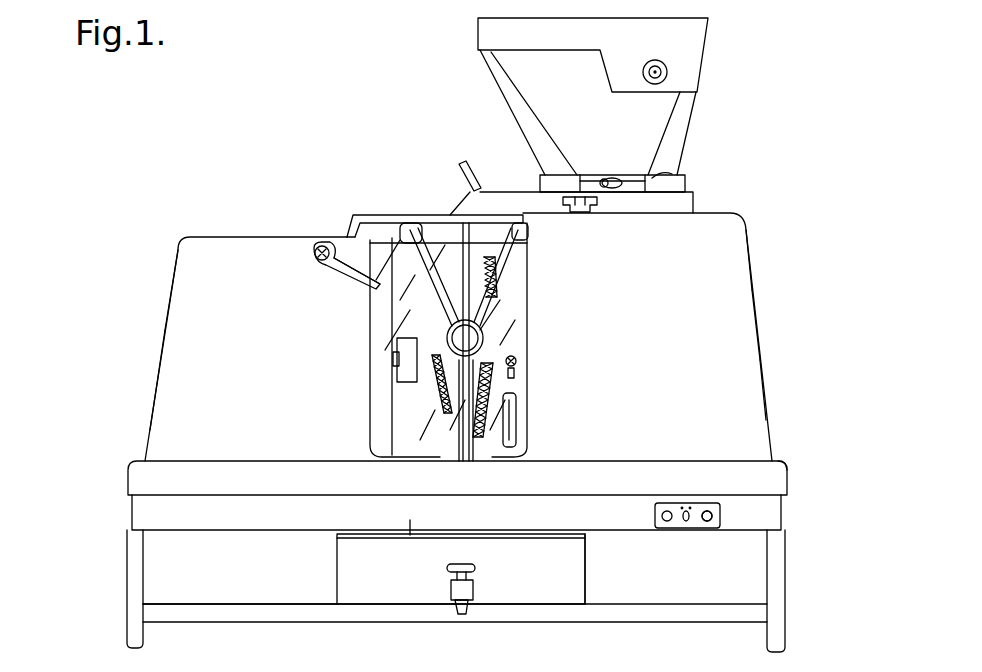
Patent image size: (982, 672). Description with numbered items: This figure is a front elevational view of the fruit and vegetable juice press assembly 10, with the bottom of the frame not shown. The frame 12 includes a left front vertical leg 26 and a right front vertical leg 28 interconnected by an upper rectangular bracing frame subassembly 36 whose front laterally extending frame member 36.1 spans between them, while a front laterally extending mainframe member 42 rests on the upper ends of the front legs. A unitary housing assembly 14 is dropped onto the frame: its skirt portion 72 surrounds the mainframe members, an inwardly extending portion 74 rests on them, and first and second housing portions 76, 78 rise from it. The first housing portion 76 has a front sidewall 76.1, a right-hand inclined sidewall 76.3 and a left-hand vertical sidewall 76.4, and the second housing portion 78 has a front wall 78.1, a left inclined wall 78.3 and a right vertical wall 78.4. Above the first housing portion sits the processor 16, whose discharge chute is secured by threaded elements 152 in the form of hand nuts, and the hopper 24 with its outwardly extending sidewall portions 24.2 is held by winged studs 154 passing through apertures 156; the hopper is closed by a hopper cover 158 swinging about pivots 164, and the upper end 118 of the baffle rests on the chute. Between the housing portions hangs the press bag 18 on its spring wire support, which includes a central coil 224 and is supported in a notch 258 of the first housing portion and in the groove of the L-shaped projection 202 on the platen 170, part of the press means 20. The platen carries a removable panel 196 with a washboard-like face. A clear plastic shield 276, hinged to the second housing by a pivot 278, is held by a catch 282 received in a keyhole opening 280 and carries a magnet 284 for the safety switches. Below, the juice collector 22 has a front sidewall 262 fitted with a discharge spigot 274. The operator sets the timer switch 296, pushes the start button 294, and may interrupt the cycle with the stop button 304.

The fruit and vegetable juice press assembly 10 is at (318, 115).
The frame 12 is at (103, 608).
The housing assembly 14 is at (774, 306).
The processor 16 is at (725, 128).
The press bag 18 is at (505, 354).
The press means 20 is at (380, 226).
The juice collector 22 is at (320, 577).
The hopper 24 is at (486, 78).
The upwardly and outwardly extending sidewall portions 24.2 is at (684, 110).
The left front vertical leg 26 is at (135, 626).
The right front vertical leg 28 is at (785, 641).
The upper rectangular bracing frame subassembly 36 is at (661, 634).
The front laterally extending frame member 36.1 is at (243, 610).
The front laterally extending mainframe member 42 is at (410, 535).
The skirt portion 72 is at (780, 484).
The inwardly extending portion 74 is at (780, 462).
The first housing portion 76 is at (752, 228).
The front vertically extending sidewall 76.1 is at (720, 270).
The right-hand inclined sidewall 76.3 is at (757, 345).
The left-hand vertically extending sidewall 76.4 is at (493, 411).
The second housing portion 78 is at (168, 236).
The front wall 78.1 is at (180, 307).
The left inclined wall 78.3 is at (157, 376).
The right vertical wall 78.4 is at (395, 405).
The upper end of the baffle 118 is at (463, 163).
The threaded elements 152 is at (597, 205).
The winged studs 154 is at (598, 178).
The apertures 156 is at (652, 160).
The hopper cover 158 is at (706, 30).
The pivots 164 is at (668, 72).
The platen 170 is at (356, 286).
The removable panel 196 is at (432, 418).
The projection 202 is at (410, 223).
The central coil 224 is at (485, 322).
The notch 258 is at (513, 214).
The front sidewall 262 is at (585, 575).
The discharge spigot 274 is at (475, 585).
The clear plastic shield 276 is at (372, 345).
The pivot 278 is at (320, 243).
The keyhole opening 280 is at (517, 380).
The catch 282 is at (517, 366).
The magnet 284 is at (517, 431).
The start button 294 is at (655, 516).
The timer switch 296 is at (686, 522).
The stop button 304 is at (712, 508).